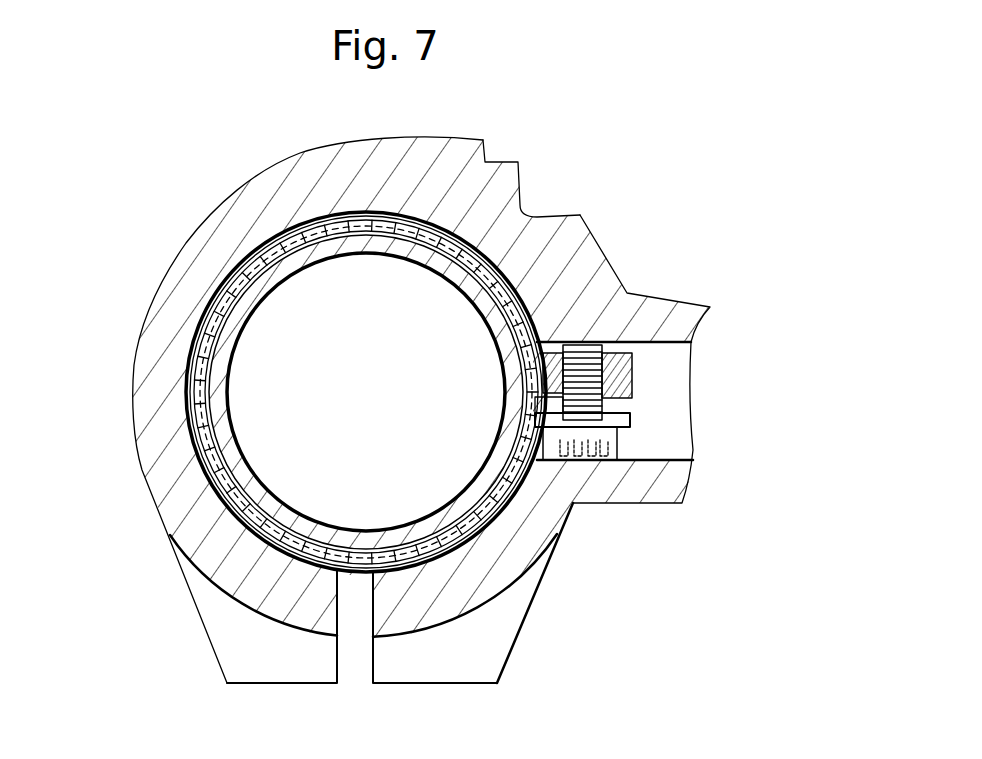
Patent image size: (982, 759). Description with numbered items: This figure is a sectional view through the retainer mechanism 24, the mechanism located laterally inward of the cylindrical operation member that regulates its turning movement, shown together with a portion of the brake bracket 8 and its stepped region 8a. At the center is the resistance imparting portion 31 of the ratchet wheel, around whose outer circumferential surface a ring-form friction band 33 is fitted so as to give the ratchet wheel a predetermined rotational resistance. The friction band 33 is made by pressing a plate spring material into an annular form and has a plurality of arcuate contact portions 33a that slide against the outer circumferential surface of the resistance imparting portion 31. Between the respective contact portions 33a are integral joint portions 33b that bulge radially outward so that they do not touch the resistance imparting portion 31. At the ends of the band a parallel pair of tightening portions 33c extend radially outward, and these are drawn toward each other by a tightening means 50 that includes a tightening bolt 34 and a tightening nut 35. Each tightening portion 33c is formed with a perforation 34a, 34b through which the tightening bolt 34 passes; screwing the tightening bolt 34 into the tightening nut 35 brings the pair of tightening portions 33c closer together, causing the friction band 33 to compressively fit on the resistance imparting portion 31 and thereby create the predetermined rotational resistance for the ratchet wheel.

The retainer mechanism 24 is at (128, 523).
The brake bracket 8 is at (652, 507).
The stepped portion of housing member 8a is at (500, 150).
The resistance imparting portion 31 is at (440, 517).
The friction band 33 is at (278, 322).
The contact portions 33a is at (345, 199).
The joint portions 33b is at (287, 212).
The tightening portions 33c is at (617, 340).
The tightening bolt 34 is at (620, 441).
The perforation 34a is at (570, 503).
The perforation 34b is at (590, 338).
The tightening nut 35 is at (633, 367).
The tightening means 50 is at (684, 373).